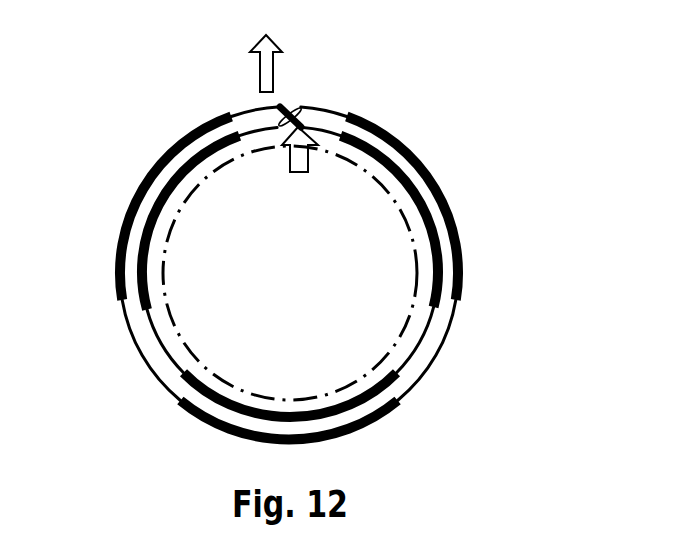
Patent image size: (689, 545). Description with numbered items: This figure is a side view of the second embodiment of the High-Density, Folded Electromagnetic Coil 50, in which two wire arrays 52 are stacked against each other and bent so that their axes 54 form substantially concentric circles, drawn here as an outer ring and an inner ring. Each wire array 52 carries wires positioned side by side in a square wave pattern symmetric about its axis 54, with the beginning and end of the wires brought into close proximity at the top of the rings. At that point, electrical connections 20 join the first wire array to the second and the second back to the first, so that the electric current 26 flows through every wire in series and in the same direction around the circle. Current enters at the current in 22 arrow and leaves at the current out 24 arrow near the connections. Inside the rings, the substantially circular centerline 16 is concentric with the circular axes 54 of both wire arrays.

The High-Density, Folded Electromagnetic Coil (HD-FEC) 50 is at (122, 113).
The wire array 52 is at (140, 322).
The axis 54 is at (163, 358).
The centerline 16 is at (227, 367).
The electrical connection 20 is at (338, 91).
The current in 22 is at (299, 172).
The current out 24 is at (203, 61).
The electric current 26 is at (428, 133).